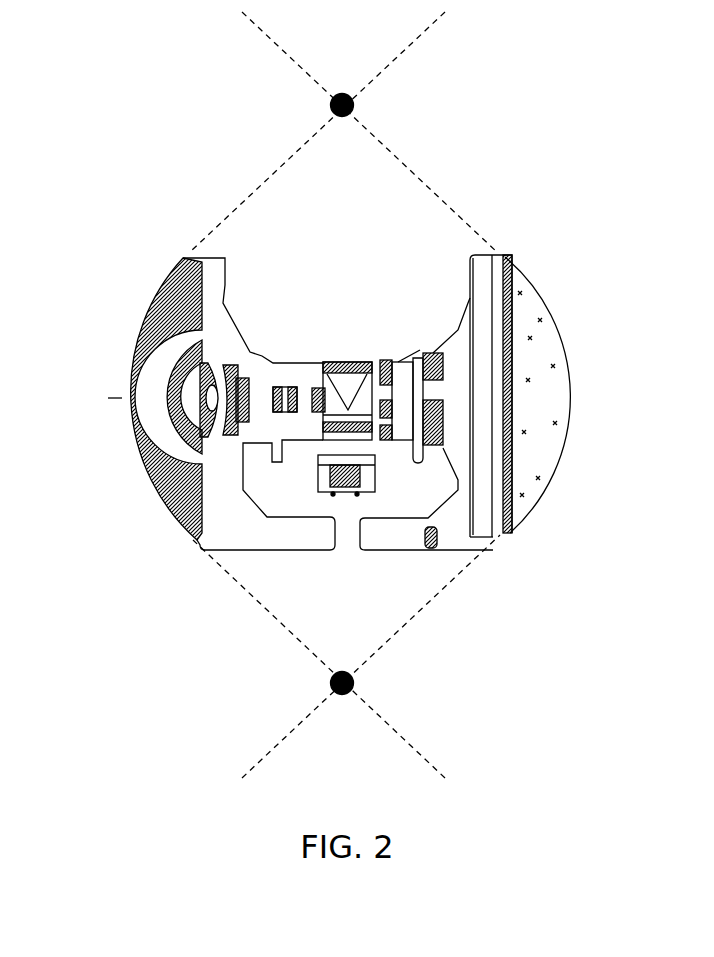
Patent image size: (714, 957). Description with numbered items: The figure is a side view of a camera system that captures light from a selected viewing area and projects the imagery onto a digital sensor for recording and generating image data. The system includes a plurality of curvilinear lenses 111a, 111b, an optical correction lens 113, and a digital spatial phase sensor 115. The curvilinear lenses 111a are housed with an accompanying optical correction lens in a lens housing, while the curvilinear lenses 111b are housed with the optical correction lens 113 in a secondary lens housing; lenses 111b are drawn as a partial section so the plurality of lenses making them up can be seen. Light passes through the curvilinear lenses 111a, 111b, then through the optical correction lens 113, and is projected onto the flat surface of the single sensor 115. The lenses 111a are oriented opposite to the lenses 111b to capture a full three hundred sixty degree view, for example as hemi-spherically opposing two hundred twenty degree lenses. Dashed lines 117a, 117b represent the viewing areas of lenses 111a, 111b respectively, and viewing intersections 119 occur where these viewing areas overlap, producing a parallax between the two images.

The curvilinear lenses 111a is at (564, 319).
The curvilinear lenses 111b is at (124, 326).
The optical correction lens 113 is at (318, 387).
The digital spatial phase sensor 115 is at (355, 346).
The lines 117a is at (461, 210).
The lines 117b is at (261, 187).
The viewing intersections 119 is at (337, 95).